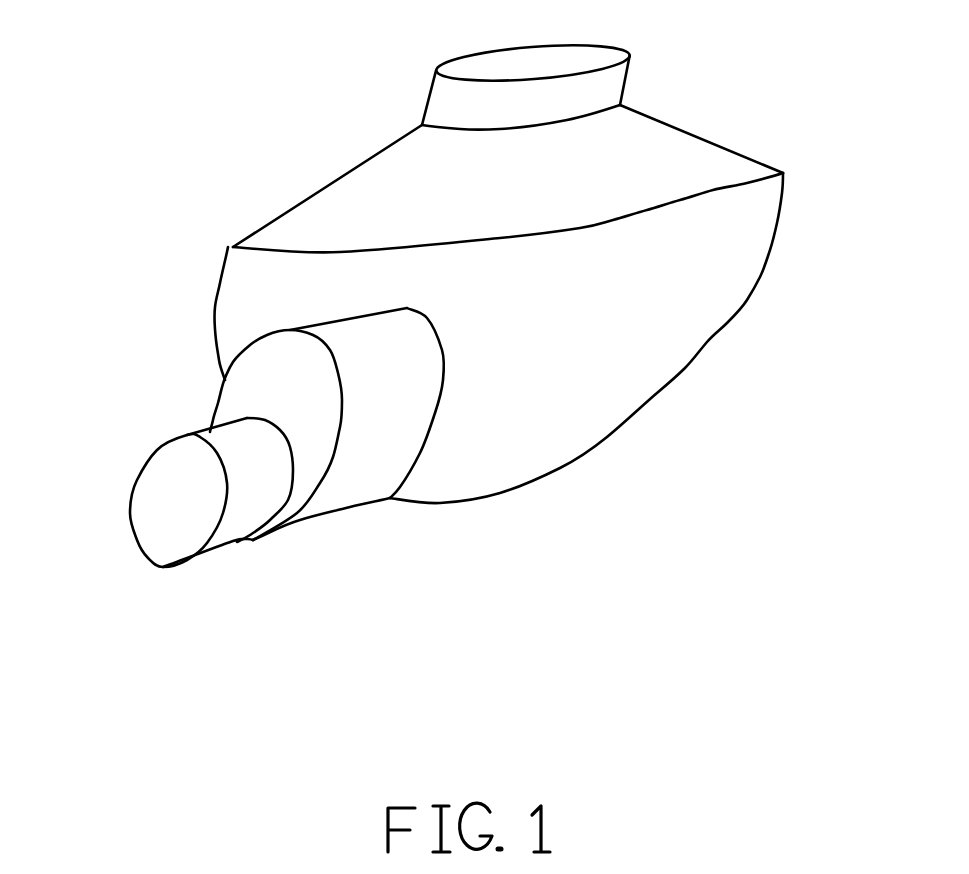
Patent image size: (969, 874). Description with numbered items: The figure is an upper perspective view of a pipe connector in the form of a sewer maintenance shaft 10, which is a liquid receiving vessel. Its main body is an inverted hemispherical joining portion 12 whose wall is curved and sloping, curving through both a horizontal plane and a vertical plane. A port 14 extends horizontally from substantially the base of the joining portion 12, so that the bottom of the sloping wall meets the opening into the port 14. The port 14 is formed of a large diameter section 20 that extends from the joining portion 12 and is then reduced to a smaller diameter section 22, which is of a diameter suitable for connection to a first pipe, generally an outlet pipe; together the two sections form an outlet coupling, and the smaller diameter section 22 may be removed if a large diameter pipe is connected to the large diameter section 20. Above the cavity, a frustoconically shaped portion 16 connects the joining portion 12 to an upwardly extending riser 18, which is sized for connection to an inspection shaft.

The sewer maintenance shaft 10 is at (449, 370).
The hemispherical joining portion 12 is at (538, 264).
The port 14 is at (236, 480).
The frustoconically shaped portion 16 is at (708, 157).
The riser 18 is at (447, 100).
The large diameter section 20 is at (348, 490).
The smaller diameter section 22 is at (237, 527).